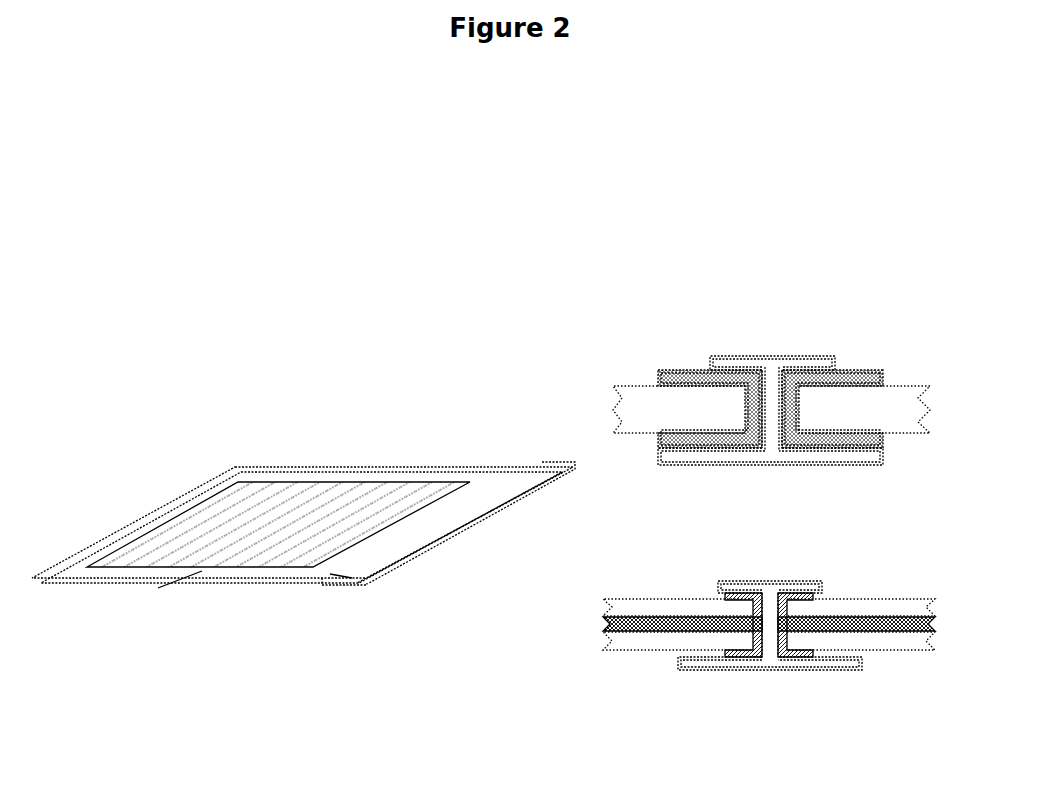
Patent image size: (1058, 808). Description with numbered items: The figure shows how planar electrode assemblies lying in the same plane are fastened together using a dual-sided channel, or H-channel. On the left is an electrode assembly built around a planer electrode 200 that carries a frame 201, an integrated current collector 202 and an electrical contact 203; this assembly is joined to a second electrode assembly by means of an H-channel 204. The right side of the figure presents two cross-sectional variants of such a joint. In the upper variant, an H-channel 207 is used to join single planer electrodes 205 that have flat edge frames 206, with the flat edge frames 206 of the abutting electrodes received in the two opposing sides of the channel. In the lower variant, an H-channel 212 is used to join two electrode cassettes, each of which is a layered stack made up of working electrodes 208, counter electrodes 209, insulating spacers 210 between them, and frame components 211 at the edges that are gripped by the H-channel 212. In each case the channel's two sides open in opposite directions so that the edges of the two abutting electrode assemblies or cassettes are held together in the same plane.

The planer electrode 200 is at (250, 472).
The frame 201 is at (368, 467).
The integrated current collector 202 is at (206, 490).
The electrical contact 203 is at (158, 588).
The H-channel 204 is at (373, 584).
The single planer electrode 205 is at (882, 413).
The flat edge frame 206 is at (843, 378).
The H-channel 207 is at (772, 455).
The working electrode 208 is at (897, 650).
The counter electrode 209 is at (640, 603).
The insulating spacer 210 is at (607, 622).
The frame component 211 is at (820, 597).
The H-channel 212 is at (708, 662).